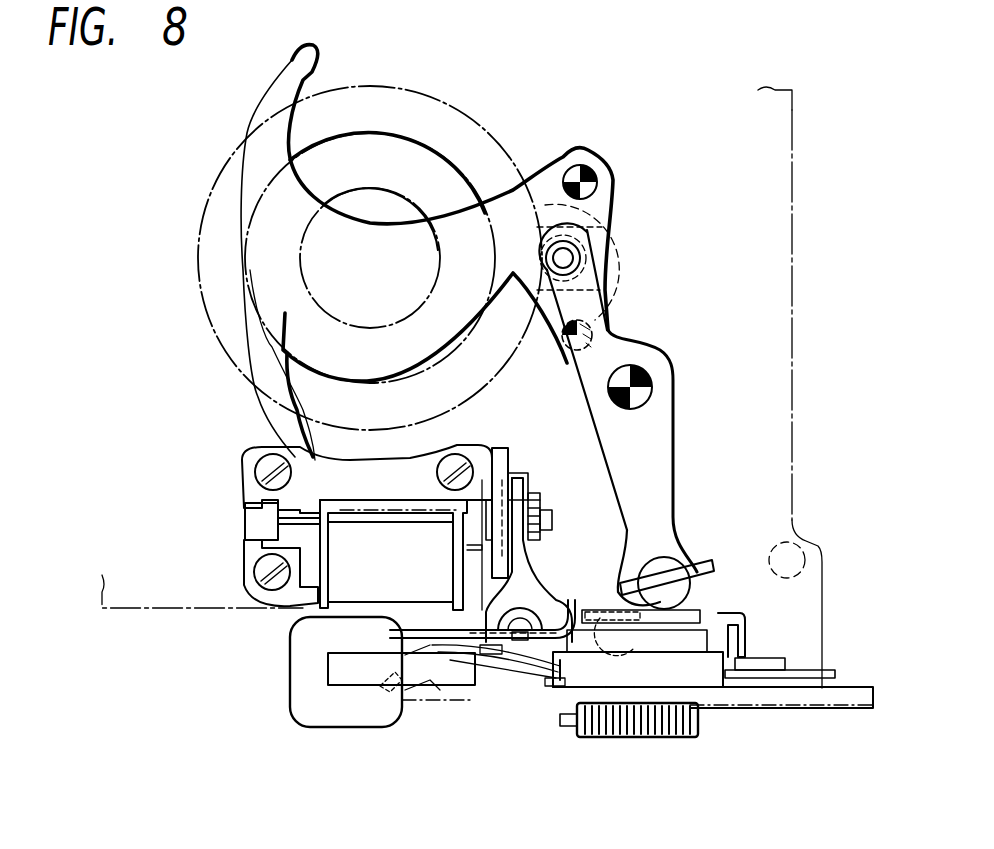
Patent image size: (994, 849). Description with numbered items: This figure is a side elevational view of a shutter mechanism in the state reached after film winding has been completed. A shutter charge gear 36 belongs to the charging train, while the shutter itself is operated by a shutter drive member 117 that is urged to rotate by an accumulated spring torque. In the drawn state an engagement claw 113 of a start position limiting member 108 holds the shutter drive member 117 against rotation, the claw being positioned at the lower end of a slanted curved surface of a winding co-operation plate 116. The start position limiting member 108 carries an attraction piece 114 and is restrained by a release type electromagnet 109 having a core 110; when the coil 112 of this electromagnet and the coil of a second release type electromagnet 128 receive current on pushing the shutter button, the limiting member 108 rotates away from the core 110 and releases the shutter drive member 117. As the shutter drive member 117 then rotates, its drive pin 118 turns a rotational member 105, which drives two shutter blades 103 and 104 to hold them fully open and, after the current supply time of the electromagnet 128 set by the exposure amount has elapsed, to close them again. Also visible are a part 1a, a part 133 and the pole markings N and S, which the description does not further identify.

The frame 1a is at (792, 205).
The shutter blade 103 is at (310, 70).
The shutter blade 104 is at (258, 378).
The rotational member 105 is at (678, 428).
The start position limiting member 108 is at (543, 580).
The release type electromagnet 109 is at (240, 565).
The core 110 is at (457, 447).
The coil 112 is at (365, 530).
The engagement claw 113 is at (600, 612).
The attraction piece 114 is at (510, 455).
The winding co-operation plate 116 is at (720, 668).
The shutter drive member 117 is at (692, 596).
The drive pin 118 is at (700, 560).
The release type electromagnet 128 is at (344, 722).
The wires 133 is at (556, 668).
The shutter charge gear 36 is at (648, 738).
The north pole of magnet N is at (250, 510).
The south pole of magnet S is at (250, 530).